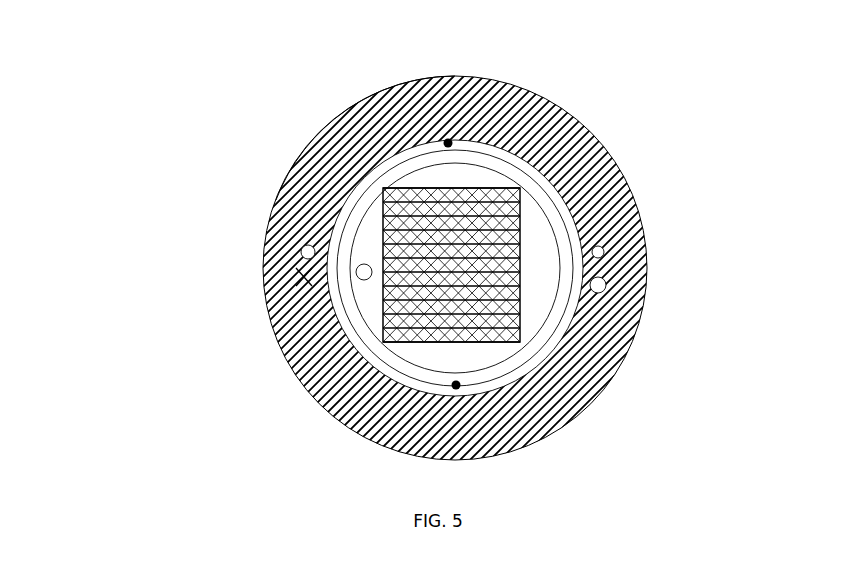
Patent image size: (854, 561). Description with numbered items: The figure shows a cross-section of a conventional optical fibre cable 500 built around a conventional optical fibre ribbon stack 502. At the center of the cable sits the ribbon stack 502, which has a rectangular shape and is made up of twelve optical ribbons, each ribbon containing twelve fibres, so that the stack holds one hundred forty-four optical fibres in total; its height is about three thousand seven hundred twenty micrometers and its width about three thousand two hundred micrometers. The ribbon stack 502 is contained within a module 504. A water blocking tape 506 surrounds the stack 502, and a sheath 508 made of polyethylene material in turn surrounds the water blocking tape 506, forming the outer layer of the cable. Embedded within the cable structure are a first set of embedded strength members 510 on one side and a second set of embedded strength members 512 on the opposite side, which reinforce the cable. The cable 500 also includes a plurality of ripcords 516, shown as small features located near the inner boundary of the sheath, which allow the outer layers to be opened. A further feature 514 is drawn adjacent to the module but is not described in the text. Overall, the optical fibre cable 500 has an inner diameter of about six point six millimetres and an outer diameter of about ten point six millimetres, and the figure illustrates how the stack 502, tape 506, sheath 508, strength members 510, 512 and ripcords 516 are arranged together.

The conventional optical fibre cable 500 is at (89, 36).
The conventional optical fibre ribbon stack 502 is at (614, 192).
The module 504 is at (603, 146).
The water blocking tape 506 is at (648, 293).
The sheath 508 is at (276, 200).
The first set of embedded strength members 510 is at (310, 283).
The second set of embedded strength members 512 is at (596, 255).
The aperture 514 is at (362, 270).
The ripcords 516 is at (456, 385).